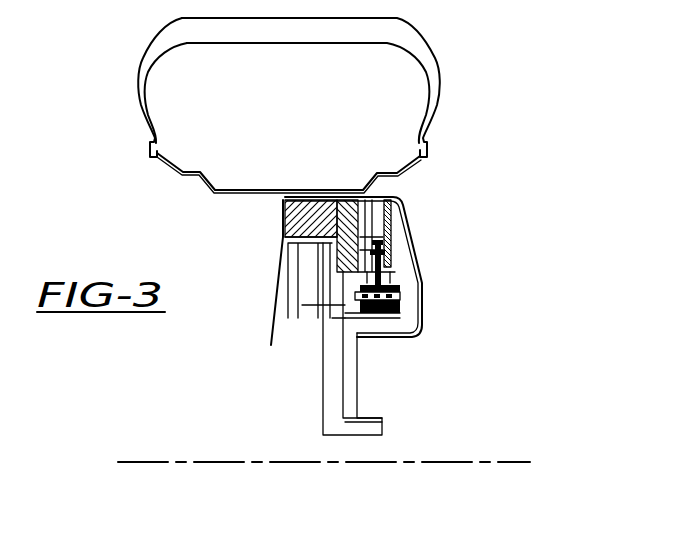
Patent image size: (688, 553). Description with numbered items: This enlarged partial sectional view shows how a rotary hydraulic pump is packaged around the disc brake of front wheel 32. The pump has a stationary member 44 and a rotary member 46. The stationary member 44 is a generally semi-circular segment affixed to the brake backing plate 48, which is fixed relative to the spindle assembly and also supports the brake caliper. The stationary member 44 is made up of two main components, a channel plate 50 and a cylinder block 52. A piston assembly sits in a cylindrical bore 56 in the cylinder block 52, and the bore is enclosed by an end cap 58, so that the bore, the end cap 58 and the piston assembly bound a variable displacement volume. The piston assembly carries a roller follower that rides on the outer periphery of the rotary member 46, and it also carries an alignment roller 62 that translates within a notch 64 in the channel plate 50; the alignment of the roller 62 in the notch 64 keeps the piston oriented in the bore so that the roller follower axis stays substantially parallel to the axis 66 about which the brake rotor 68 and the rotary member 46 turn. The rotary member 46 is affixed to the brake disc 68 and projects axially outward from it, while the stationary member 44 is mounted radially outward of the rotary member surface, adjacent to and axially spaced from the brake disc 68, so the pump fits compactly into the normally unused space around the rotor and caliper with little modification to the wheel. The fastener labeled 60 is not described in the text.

The front wheel 32 is at (433, 110).
The stationary member 44 is at (423, 276).
The rotary member 46 is at (416, 334).
The brake backing plate 48 is at (283, 248).
The channel plate 50 is at (323, 220).
The cylinder block 52 is at (393, 238).
The cylindrical bore 56 is at (400, 265).
The end cap 58 is at (387, 210).
The nut 60 is at (398, 302).
The alignment roller 62 is at (343, 308).
The notch 64 is at (343, 292).
The axis 66 is at (422, 462).
The brake rotor 68 is at (293, 286).